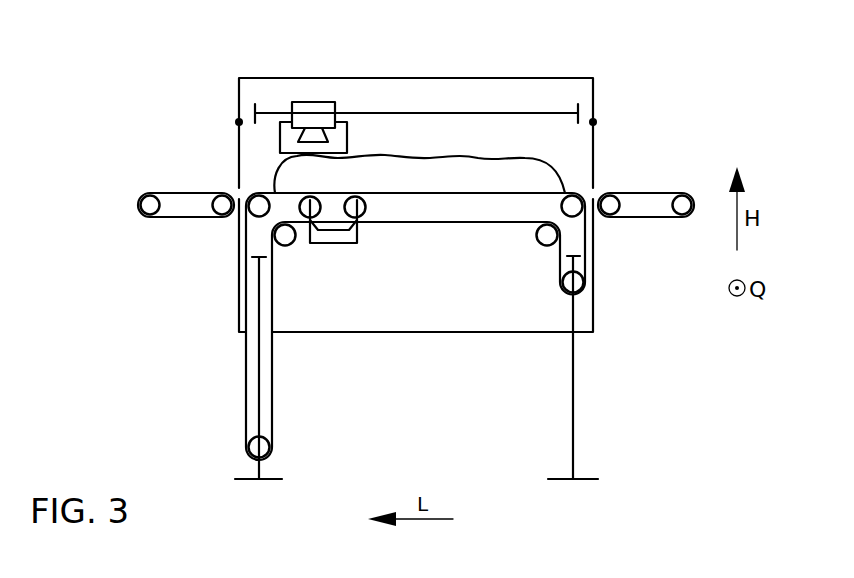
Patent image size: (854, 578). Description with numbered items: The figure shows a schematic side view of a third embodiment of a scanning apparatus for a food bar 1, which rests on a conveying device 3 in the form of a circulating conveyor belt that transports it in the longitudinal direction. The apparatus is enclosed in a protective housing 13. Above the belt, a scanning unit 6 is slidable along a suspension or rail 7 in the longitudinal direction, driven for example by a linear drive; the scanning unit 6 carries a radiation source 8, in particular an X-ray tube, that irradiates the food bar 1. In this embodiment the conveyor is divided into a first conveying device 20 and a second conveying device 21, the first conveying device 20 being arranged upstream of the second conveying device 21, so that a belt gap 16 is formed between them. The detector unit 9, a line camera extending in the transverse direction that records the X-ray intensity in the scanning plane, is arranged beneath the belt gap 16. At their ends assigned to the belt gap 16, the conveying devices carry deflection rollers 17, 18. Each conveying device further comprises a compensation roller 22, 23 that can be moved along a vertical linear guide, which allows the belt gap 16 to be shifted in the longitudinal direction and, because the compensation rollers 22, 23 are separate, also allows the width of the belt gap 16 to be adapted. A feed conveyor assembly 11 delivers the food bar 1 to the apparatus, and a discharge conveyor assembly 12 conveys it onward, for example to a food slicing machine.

The food bar 1 is at (490, 160).
The conveying device 3 is at (588, 233).
The scanning unit 6 is at (303, 92).
The rail 7 is at (406, 113).
The radiation source 8 is at (326, 108).
The detector unit 9 is at (336, 240).
The feed conveyor assembly 11 is at (667, 175).
The discharge conveyor assembly 12 is at (167, 175).
The protective housing 13 is at (563, 78).
The belt gap 16 is at (340, 186).
The deflection roller 17 is at (305, 215).
The deflection roller 18 is at (364, 218).
The first conveying device 20 is at (568, 189).
The second conveying device 21 is at (270, 190).
The compensation roller 22 is at (562, 283).
The compensation roller 23 is at (272, 450).